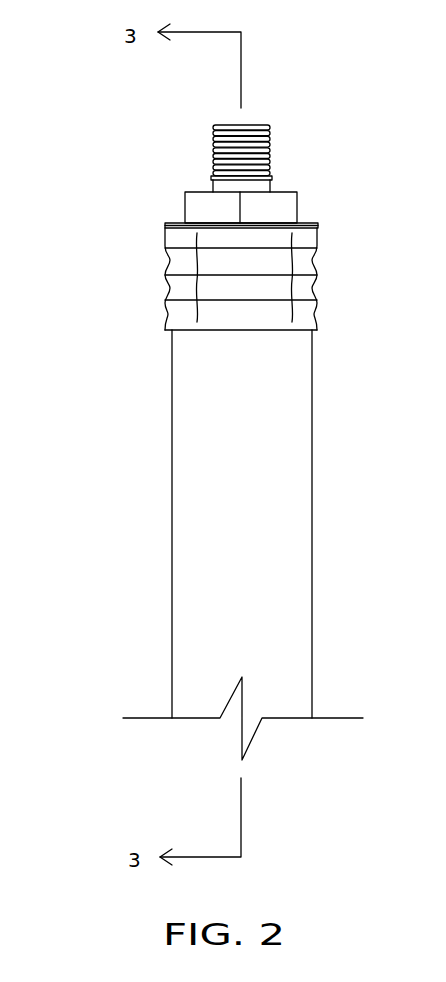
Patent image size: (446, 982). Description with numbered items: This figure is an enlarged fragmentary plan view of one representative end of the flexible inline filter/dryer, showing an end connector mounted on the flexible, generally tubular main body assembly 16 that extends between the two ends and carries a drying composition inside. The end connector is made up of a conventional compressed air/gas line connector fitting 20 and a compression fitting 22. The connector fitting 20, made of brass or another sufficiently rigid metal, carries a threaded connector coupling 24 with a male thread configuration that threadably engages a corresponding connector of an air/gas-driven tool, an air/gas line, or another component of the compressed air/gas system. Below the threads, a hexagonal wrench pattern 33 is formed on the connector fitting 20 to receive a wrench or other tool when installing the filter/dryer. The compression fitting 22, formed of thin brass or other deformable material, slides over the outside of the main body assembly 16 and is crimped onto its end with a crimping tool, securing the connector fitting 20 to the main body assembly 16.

The connector fitting 20 is at (230, 163).
The threaded connector coupling 24 is at (268, 156).
The hexagonal wrench pattern 33 is at (270, 212).
The compression fitting 22 is at (148, 293).
The main body assembly 16 is at (152, 528).